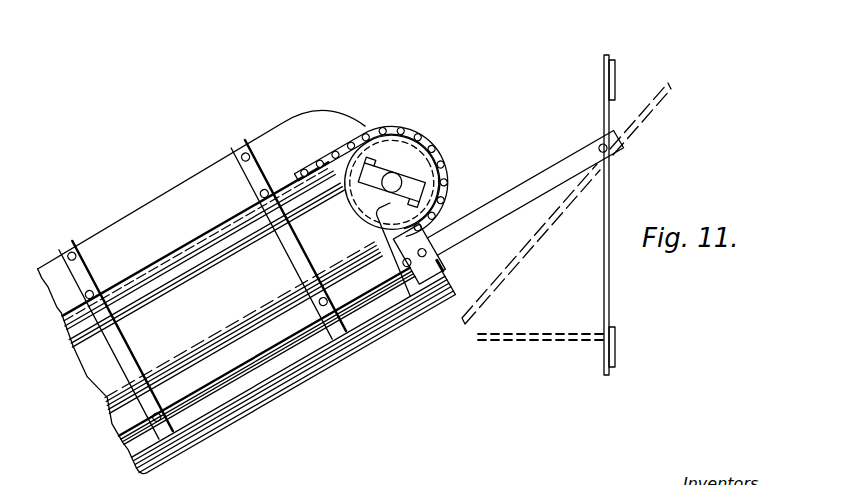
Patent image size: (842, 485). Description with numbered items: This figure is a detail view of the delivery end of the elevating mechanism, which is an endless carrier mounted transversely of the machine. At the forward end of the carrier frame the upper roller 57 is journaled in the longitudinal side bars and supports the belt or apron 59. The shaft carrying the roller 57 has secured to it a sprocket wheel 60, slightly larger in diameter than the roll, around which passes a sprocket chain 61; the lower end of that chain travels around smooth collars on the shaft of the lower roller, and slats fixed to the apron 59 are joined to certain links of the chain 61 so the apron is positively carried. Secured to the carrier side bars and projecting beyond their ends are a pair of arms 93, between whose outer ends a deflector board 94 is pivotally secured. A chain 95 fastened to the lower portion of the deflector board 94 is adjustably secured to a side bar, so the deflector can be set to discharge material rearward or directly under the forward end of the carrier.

The roller 57 is at (394, 181).
The apron 59 is at (232, 326).
The sprocket wheel 60 is at (383, 154).
The sprocket chain 61 is at (313, 166).
The arm 93 is at (531, 179).
The deflector board 94 is at (606, 279).
The chain 95 is at (543, 343).